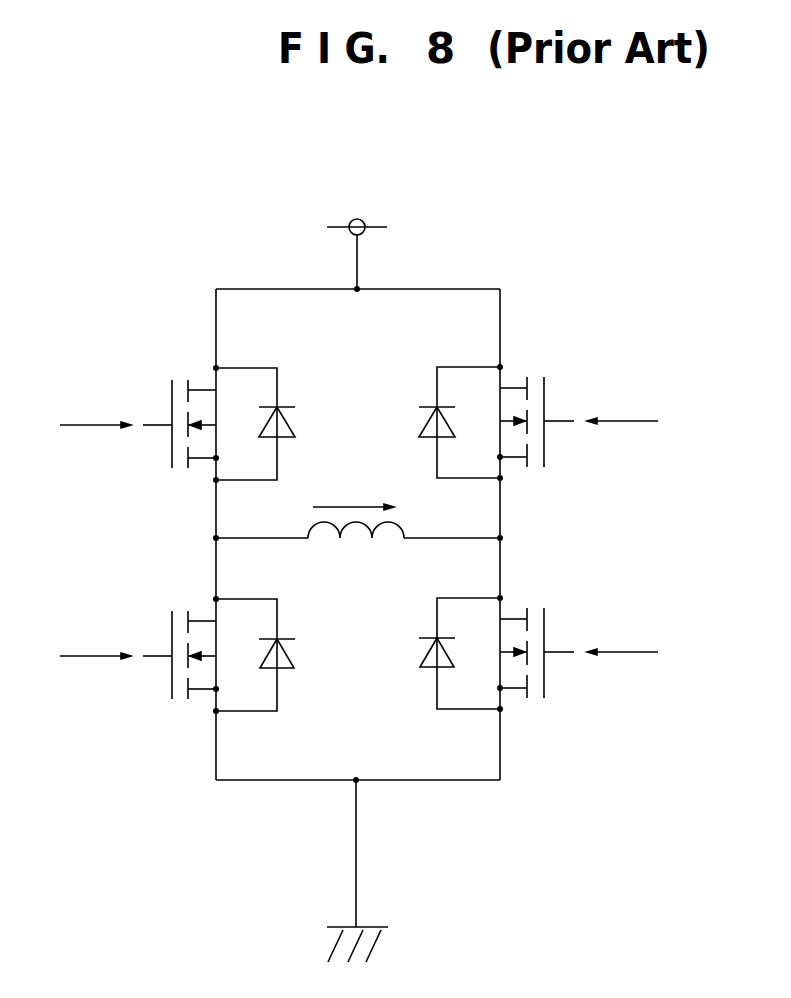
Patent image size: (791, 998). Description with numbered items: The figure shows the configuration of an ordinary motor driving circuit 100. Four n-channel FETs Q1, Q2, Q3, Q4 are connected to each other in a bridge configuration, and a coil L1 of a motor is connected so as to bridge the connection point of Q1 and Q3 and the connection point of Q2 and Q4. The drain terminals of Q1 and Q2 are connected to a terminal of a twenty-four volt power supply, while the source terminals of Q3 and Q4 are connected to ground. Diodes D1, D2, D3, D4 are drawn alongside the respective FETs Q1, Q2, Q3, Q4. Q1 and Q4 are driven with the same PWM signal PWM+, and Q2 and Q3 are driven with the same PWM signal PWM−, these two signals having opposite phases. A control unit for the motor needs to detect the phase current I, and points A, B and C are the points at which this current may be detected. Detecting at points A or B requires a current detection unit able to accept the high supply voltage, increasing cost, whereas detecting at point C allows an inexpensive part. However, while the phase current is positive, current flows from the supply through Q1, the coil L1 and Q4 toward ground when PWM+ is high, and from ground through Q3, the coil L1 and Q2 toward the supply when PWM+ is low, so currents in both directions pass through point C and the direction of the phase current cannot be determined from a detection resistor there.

The motor driving circuit 100 is at (446, 287).
The FET Q1 is at (179, 409).
The FET Q2 is at (537, 404).
The FET Q3 is at (179, 637).
The FET Q4 is at (537, 636).
The body diode of Q1 D1 is at (269, 424).
The body diode of Q2 D2 is at (446, 422).
The body diode of Q3 D3 is at (271, 655).
The body diode of Q4 D4 is at (448, 653).
The coil L1 is at (356, 545).